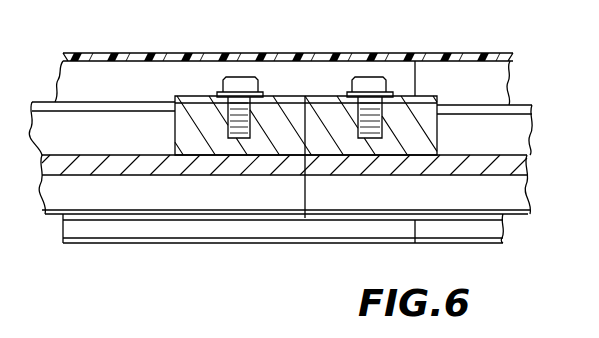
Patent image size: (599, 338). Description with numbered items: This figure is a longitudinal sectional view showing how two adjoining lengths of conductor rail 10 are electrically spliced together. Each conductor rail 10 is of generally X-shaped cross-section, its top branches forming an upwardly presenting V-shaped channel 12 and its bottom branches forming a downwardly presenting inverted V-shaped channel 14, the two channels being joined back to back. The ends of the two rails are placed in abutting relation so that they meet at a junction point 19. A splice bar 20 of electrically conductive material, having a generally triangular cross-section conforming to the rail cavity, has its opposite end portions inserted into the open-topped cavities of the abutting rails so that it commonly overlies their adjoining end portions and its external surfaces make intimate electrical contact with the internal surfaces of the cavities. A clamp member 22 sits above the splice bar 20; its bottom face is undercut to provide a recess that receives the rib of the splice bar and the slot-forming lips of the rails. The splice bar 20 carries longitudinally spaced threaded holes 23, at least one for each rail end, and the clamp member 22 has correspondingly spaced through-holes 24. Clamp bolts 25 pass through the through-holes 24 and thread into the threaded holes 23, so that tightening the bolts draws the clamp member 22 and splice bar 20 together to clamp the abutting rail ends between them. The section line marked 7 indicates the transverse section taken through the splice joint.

The section line 7- 7 is at (240, 21).
The conductor rail 10 is at (60, 200).
The V-shaped channel 12 is at (62, 133).
The inverted V-shaped channel 14 is at (85, 182).
The junction point 19 is at (308, 192).
The splice bar 20 is at (403, 135).
The clamp member 22 is at (312, 87).
The threaded holes 23 is at (228, 122).
The through-holes 24 is at (223, 95).
The clamp bolts 25 is at (242, 84).